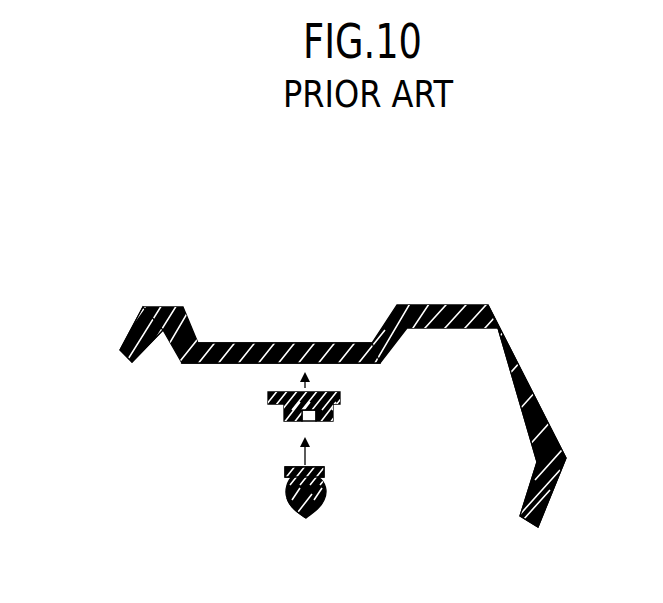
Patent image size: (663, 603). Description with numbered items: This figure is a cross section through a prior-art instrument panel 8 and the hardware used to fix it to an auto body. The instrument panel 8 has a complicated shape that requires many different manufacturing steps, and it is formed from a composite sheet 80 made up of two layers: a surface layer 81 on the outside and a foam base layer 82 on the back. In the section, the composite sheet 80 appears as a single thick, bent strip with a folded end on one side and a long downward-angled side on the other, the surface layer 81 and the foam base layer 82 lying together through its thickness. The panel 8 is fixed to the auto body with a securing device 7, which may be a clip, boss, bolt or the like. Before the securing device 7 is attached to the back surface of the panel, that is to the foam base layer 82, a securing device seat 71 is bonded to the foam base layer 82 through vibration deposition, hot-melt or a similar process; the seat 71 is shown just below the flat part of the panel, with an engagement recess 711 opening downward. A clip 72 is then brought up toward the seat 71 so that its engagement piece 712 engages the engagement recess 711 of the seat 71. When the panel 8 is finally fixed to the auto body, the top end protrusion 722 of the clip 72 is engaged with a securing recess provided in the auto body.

The instrument panel 8 is at (313, 312).
The composite sheet 80 is at (122, 355).
The surface layer 81 is at (503, 328).
The foam base layer 82 is at (221, 363).
The securing device 7 is at (260, 443).
The securing device seat 71 is at (335, 410).
The engagement recess 711 is at (306, 412).
The engagement piece 712 is at (322, 470).
The clip 72 is at (327, 485).
The top end protrusion 722 is at (327, 513).